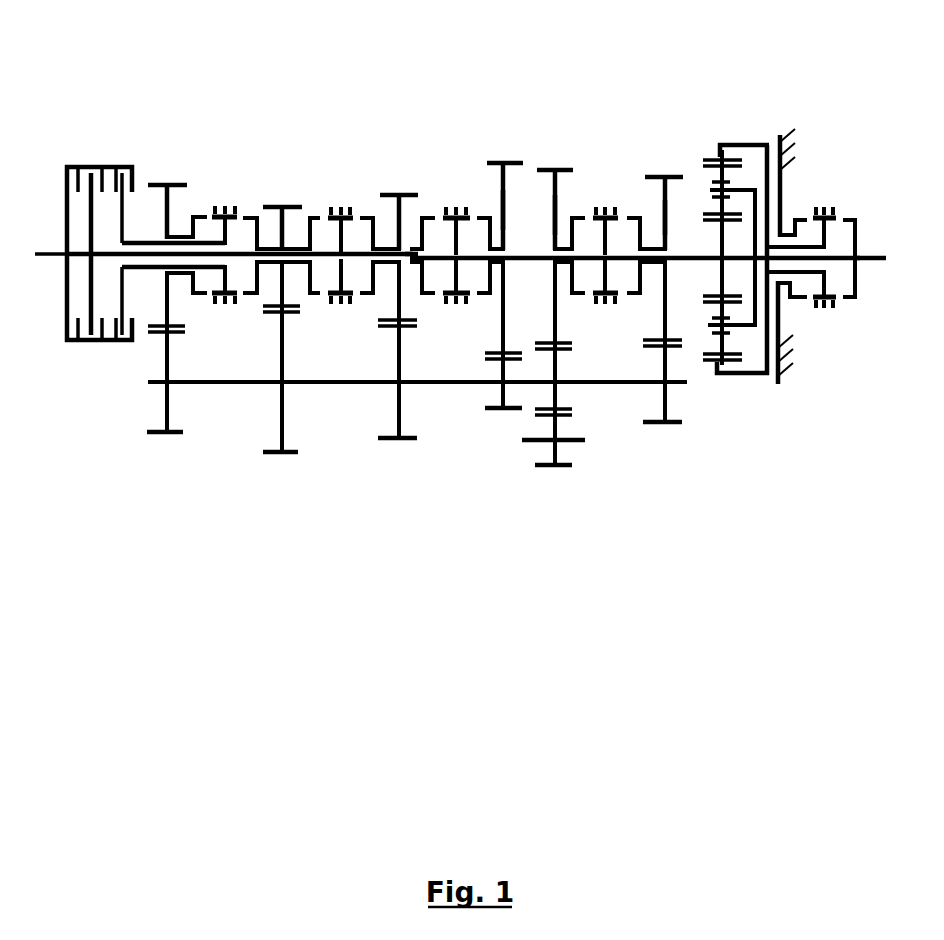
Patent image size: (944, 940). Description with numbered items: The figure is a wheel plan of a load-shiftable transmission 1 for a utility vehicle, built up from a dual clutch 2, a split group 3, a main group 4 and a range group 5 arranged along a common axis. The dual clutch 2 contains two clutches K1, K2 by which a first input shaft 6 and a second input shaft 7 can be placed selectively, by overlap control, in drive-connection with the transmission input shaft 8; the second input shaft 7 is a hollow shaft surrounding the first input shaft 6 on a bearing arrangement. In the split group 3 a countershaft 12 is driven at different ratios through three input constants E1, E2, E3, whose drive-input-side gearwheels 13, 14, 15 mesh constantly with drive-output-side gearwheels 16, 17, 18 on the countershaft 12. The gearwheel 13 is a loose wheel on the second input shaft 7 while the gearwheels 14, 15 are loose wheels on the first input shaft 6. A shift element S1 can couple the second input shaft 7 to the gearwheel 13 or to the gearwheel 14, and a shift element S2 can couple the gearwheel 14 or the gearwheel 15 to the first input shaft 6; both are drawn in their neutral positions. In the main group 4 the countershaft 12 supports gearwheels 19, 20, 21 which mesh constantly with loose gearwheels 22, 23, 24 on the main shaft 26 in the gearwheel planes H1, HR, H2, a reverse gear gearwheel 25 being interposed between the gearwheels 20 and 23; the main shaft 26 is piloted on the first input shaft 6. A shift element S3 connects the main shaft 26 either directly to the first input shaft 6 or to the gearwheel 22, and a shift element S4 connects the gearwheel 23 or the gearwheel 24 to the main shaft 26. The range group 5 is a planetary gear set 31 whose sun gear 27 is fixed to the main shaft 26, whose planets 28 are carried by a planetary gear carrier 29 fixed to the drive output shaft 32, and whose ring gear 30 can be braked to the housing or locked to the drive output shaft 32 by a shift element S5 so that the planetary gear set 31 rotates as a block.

The load-shiftable transmission 1 is at (461, 482).
The dual clutch 2 is at (74, 368).
The split group 3 is at (277, 472).
The main group 4 is at (615, 456).
The range group 5 is at (758, 408).
The first input shaft 6 is at (143, 258).
The second input shaft 7 is at (141, 241).
The transmission input shaft 8 is at (47, 252).
The countershaft 12 is at (338, 385).
The drive-input-side gearwheel 13 is at (169, 305).
The drive-input-side gearwheel 14 is at (279, 298).
The drive-input-side gearwheel 15 is at (397, 300).
The drive-output-side gearwheel 16 is at (165, 409).
The drive-output-side gearwheel 17 is at (284, 432).
The drive-output-side gearwheel 18 is at (401, 416).
The drive-input-side gearwheel 19 is at (502, 394).
The drive-input-side gearwheel 20 is at (553, 392).
The drive-input-side gearwheel 21 is at (667, 397).
The drive-output-side gearwheel 22 is at (509, 217).
The drive-output-side gearwheel 23 is at (556, 192).
The drive-output-side gearwheel 24 is at (661, 196).
The reverse gear gearwheel 25 is at (587, 443).
The main shaft 26 is at (687, 255).
The sun gear 27 is at (718, 290).
The planets 28 is at (752, 343).
The planetary gear carrier 29 is at (752, 155).
The ring gear 30 is at (704, 158).
The planetary gear set 31 is at (742, 125).
The drive output shaft 32 is at (872, 256).
The clutch K1 is at (122, 157).
The clutch K2 is at (86, 158).
The input constant E1 is at (163, 168).
The input constant E2 is at (279, 196).
The input constant E3 is at (398, 182).
The shift element S1 is at (223, 205).
The shift element S2 is at (341, 207).
The shift element S3 is at (455, 206).
The shift element S4 is at (606, 206).
The shift element S5 is at (828, 208).
The gearwheel plane H1 is at (503, 152).
The gearwheel plane HR is at (556, 160).
The gearwheel plane H2 is at (667, 165).